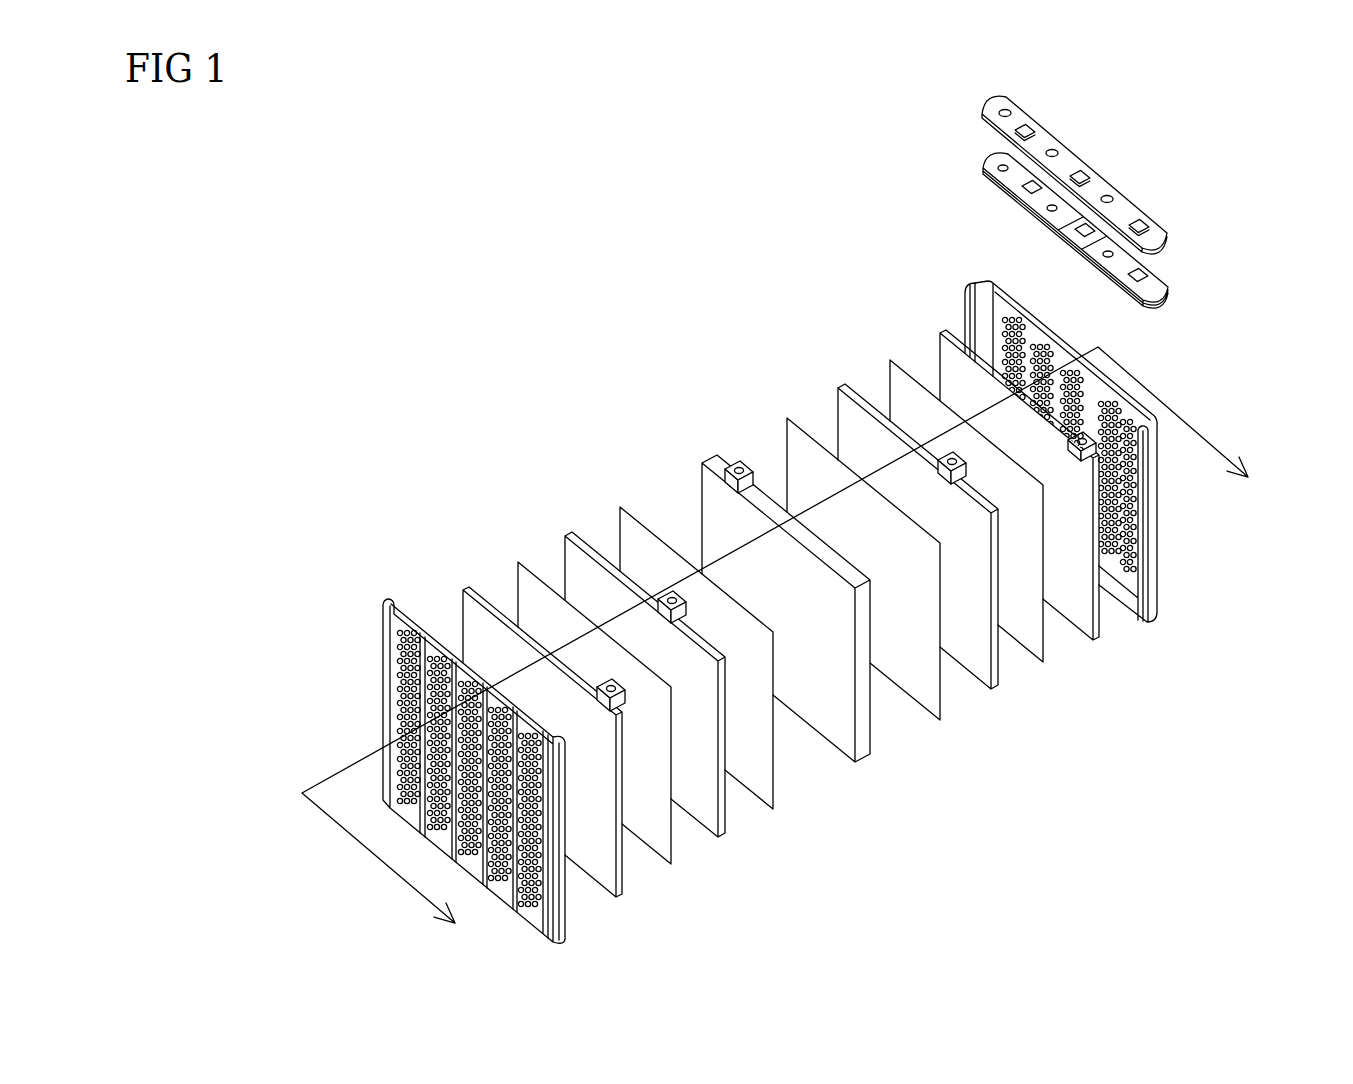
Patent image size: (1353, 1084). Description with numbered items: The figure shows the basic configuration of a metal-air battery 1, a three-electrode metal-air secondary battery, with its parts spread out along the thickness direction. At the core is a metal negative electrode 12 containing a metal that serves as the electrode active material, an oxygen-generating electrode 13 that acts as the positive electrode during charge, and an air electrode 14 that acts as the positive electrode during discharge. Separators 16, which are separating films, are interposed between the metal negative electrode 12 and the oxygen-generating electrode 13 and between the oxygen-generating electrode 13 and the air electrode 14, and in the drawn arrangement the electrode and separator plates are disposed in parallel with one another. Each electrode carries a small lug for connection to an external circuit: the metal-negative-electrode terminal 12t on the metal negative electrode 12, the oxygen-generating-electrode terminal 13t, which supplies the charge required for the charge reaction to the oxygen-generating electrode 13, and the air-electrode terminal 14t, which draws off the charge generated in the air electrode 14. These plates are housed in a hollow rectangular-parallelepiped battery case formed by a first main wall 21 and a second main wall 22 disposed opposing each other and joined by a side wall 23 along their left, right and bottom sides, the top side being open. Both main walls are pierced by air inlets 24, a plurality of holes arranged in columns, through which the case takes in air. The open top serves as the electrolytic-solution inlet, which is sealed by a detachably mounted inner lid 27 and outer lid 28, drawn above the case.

The metal-air battery 1 is at (410, 232).
The metal negative electrode 12 is at (697, 480).
The metal-negative-electrode terminal 12t is at (735, 460).
The oxygen-generating electrode 13 is at (572, 565).
The oxygen-generating-electrode terminal 13t is at (686, 614).
The air electrode 14 is at (460, 613).
The air-electrode terminal 14t is at (621, 694).
The separator 16 is at (520, 588).
The first main wall 21 is at (1022, 300).
The second main wall 22 is at (370, 620).
The side wall 23 is at (982, 300).
The air inlets 24 is at (400, 690).
The inner lid 27 is at (1160, 282).
The outer lid 28 is at (1103, 184).